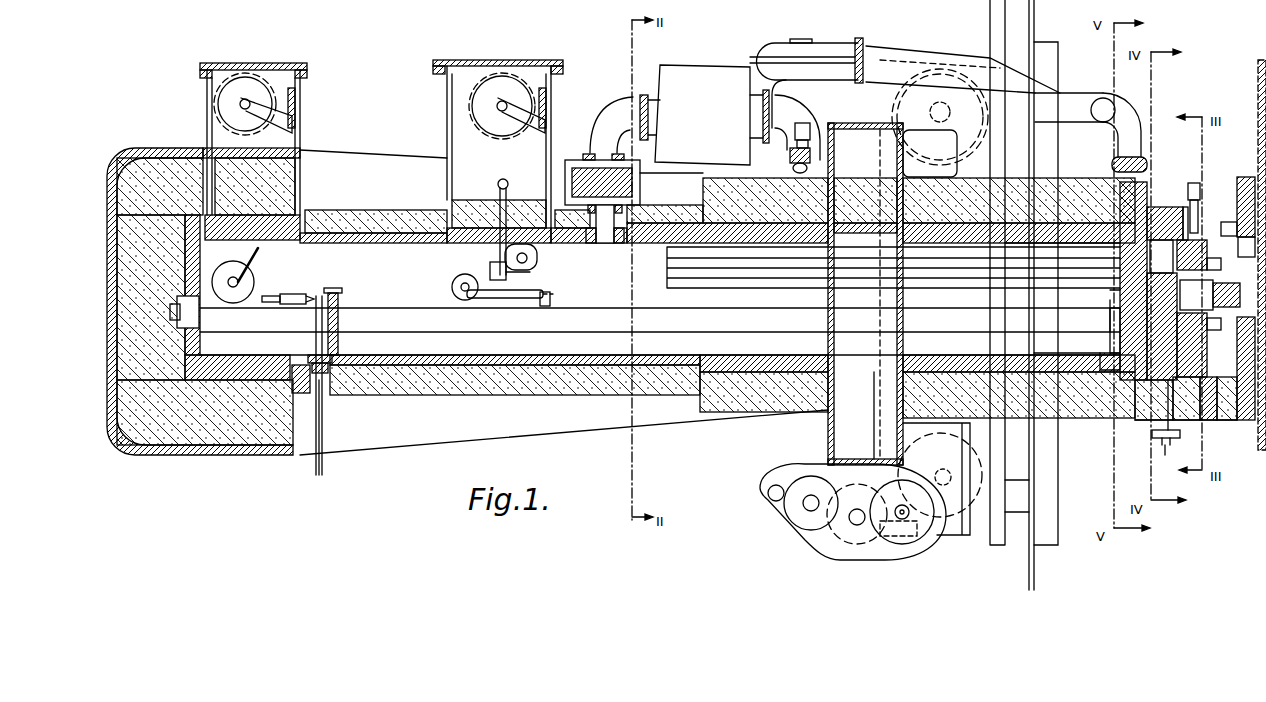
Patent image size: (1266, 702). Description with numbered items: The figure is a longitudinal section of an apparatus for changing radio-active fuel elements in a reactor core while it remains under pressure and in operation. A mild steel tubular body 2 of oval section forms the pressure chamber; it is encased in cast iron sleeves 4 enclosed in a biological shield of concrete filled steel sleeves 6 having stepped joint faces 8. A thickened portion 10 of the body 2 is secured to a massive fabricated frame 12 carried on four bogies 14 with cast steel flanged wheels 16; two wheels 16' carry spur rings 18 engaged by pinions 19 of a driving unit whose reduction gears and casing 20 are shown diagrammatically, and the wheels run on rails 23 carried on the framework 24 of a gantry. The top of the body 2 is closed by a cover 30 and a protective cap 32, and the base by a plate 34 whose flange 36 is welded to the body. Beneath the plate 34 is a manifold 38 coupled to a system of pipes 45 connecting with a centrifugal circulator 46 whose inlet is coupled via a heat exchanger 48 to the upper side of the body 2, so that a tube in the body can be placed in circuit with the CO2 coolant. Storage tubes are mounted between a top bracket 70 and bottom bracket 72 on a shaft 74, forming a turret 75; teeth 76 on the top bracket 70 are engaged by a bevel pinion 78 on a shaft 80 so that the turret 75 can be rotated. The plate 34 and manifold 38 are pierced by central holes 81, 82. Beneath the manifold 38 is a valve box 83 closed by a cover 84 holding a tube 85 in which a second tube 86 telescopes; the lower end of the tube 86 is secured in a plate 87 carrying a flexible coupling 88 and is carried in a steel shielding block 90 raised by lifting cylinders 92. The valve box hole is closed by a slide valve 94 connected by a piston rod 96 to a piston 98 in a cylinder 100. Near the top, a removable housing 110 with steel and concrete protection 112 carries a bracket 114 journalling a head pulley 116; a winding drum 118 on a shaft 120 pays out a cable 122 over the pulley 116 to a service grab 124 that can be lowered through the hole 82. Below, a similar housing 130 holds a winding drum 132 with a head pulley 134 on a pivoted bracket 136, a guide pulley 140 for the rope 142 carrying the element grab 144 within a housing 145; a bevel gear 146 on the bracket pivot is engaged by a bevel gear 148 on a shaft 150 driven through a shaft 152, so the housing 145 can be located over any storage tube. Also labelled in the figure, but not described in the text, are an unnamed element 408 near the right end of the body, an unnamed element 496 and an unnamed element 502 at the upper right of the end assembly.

The tubular body 2 is at (968, 356).
The cast iron sleeves 4 is at (925, 360).
The concrete filled steel sleeves 6 is at (1046, 293).
The stepped joint faces 8 is at (1086, 420).
The thickened portion 10 is at (764, 392).
The frame 12 is at (828, 440).
The bogies 14 is at (962, 535).
The flanged wheels 16 is at (958, 123).
The wheels 16' is at (1001, 290).
The spur rings 18 is at (1012, 462).
The pinions 19 is at (905, 545).
The train of reduction gears and casing 20 is at (840, 560).
The rails 23 is at (1010, 512).
The framework 24 is at (1020, 480).
The cover 30 is at (660, 320).
The protective cap 32 is at (291, 456).
The plate 34 is at (1108, 330).
The flange 36 is at (1118, 352).
The manifold 38 is at (1105, 420).
The system of pipes 45 is at (925, 58).
The centrifugal circulator 46 is at (824, 50).
The heat exchanger 48 is at (724, 120).
The top bracket 70 is at (339, 312).
The bottom bracket 72 is at (1118, 334).
The shaft 74 is at (268, 333).
The turret 75 is at (256, 330).
The teeth 76 is at (341, 294).
The bevel pinion 78 is at (318, 356).
The shaft 80 is at (324, 421).
The hole 81 is at (1100, 290).
The hole 82 is at (1150, 288).
The valve box 83 is at (1166, 455).
The cover 84 is at (1214, 420).
The tube 85 is at (1195, 308).
The second tube 86 is at (1222, 298).
The plate 87 is at (1225, 225).
The flexible coupling 88 is at (1238, 229).
The steel shielding block 90 is at (1243, 340).
The lifting cylinders 92 is at (1222, 272).
The slide valve 94 is at (1161, 256).
The piston rod 96 is at (1140, 420).
The piston 98 is at (1158, 438).
The cylinder 100 is at (1160, 445).
The removable housing 110 is at (298, 103).
The steel and concrete protection 112 is at (292, 196).
The bracket 114 is at (262, 253).
The head pulley 116 is at (257, 281).
The winding drum 118 is at (222, 111).
The shaft 120 is at (246, 99).
The cable 122 is at (206, 254).
The service grab 124 is at (287, 296).
The housing 130 is at (512, 62).
The winding drum 132 is at (470, 110).
The head pulley 134 is at (455, 288).
The bracket 136 is at (478, 272).
The guide pulley 140 is at (538, 260).
The rope 142 is at (533, 157).
The element grab 144 is at (550, 296).
The housing 145 is at (508, 300).
The bevel gear 146 is at (500, 279).
The bevel gear 148 is at (530, 274).
The shaft 150 is at (485, 212).
The shaft 152 is at (512, 176).
The bar 408 is at (1120, 246).
The bolt 496 is at (1192, 183).
The nut 502 is at (1203, 185).